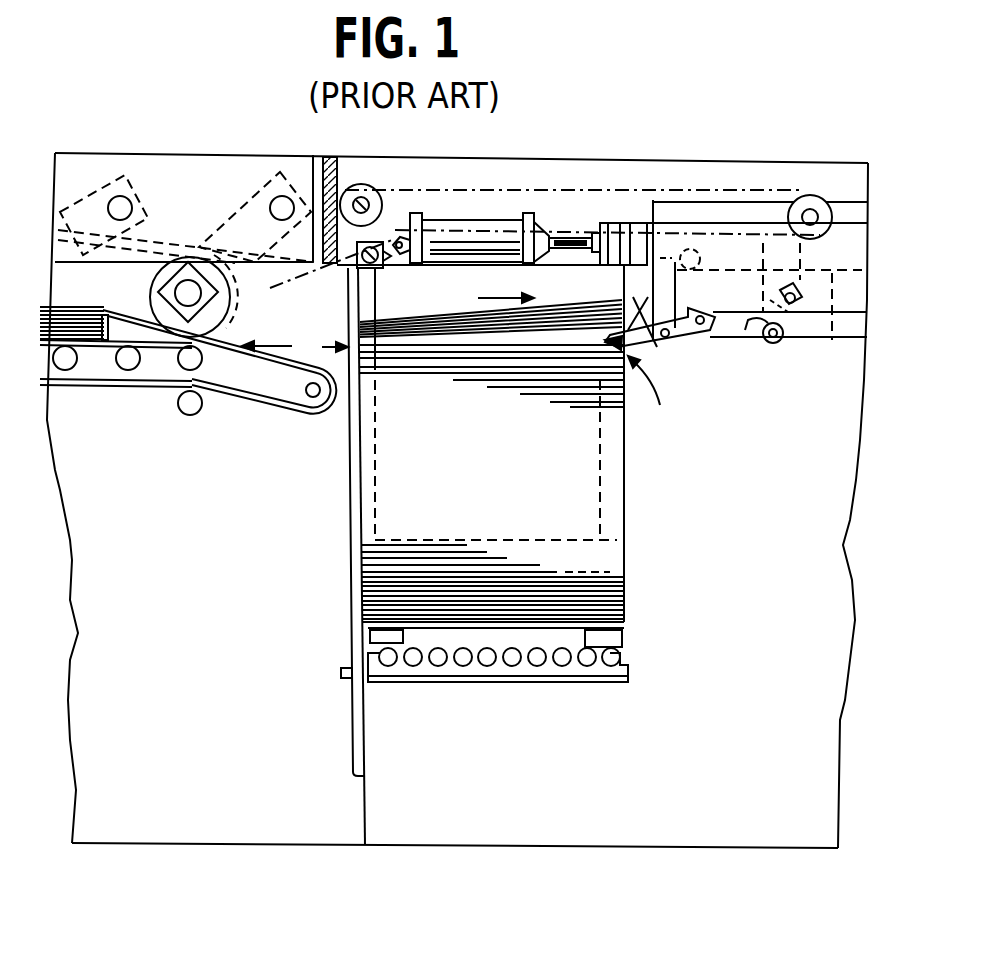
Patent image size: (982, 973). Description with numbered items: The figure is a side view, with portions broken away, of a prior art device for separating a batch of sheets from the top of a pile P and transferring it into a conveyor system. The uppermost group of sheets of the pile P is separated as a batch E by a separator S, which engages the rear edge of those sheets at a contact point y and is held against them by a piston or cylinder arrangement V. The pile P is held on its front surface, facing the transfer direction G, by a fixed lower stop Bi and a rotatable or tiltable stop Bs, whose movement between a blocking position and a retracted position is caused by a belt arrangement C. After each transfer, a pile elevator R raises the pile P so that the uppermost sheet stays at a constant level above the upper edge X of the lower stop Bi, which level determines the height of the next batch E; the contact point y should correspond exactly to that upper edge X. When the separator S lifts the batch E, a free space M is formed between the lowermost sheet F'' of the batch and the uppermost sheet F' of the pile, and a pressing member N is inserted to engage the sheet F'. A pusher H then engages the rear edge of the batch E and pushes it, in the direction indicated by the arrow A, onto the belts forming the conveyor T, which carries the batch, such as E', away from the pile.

The piston or cylinder arrangement V is at (483, 240).
The belt arrangement C is at (590, 190).
The rotatable or tiltable stop BS is at (353, 307).
The fixed lower stop Bi is at (353, 528).
The pile P is at (358, 476).
The batch E is at (491, 309).
The uppermost sheet of the pile F' is at (492, 405).
The lowermost sheet of the batch F'' is at (492, 406).
The free space M is at (523, 347).
The pressing member N is at (583, 350).
The feed direction arrow A is at (493, 297).
The transfer direction G is at (283, 346).
The upper edge of the lower fixed stop X is at (328, 347).
The transferred batch E' is at (74, 303).
The conveyor T is at (218, 420).
The separator S is at (653, 345).
The contact point y is at (652, 392).
The pusher H is at (762, 343).
The pile elevator R is at (503, 668).